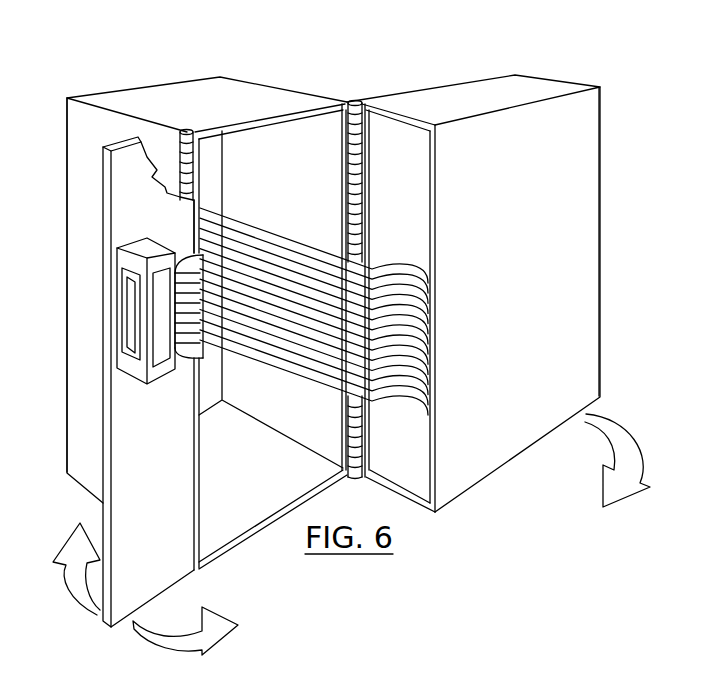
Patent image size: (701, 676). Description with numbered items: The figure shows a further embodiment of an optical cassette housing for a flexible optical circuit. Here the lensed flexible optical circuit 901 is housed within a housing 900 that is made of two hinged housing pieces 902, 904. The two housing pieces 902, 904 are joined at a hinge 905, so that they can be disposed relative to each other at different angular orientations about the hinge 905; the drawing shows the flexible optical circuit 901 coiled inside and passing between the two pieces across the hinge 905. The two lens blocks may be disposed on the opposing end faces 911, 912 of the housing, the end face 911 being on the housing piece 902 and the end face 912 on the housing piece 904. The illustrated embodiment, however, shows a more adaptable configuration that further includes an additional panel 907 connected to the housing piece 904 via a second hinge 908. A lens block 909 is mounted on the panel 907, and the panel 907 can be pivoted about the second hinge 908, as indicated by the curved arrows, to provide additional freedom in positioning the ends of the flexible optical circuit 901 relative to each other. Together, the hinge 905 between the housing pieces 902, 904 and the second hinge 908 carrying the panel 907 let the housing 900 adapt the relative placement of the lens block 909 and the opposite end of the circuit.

The housing 900 is at (443, 47).
The lensed flexible optical circuit 901 is at (258, 246).
The housing piece 902 is at (585, 64).
The housing piece 904 is at (253, 97).
The hinge 905 is at (357, 102).
The panel 907 is at (158, 473).
The second hinge 908 is at (187, 129).
The lens block 909 is at (142, 250).
The end face 911 is at (619, 150).
The end face 912 is at (60, 96).